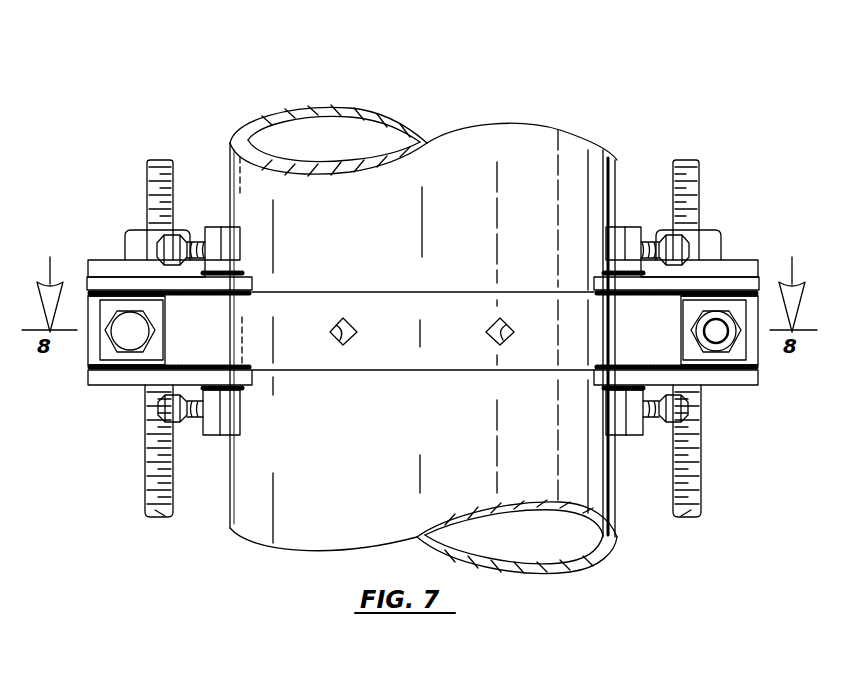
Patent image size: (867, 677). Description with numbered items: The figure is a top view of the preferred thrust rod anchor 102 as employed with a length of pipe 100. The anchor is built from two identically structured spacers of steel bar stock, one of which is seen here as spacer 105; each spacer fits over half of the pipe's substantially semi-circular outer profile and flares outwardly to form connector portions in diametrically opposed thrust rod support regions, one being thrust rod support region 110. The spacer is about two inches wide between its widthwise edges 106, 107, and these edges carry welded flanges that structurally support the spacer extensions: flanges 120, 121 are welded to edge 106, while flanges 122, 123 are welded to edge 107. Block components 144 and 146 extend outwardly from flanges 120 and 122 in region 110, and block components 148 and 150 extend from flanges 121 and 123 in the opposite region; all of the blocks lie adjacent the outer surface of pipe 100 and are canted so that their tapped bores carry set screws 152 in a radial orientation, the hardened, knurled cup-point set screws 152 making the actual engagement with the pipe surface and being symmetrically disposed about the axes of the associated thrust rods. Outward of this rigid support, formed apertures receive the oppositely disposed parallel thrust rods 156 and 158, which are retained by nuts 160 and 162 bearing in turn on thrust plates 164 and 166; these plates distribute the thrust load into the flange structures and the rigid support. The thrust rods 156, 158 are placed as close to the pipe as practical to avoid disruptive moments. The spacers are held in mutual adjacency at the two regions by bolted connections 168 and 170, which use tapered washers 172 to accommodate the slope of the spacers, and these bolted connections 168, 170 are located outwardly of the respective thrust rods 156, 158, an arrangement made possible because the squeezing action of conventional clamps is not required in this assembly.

The pipe segment 100 is at (258, 125).
The thrust rod anchor 102 is at (702, 330).
The spacer 105 is at (515, 353).
The widthwise edge 106 is at (438, 270).
The widthwise edge 107 is at (383, 370).
The thrust rod support region 110 is at (164, 318).
The flange 120 is at (95, 284).
The flange 121 is at (752, 287).
The flange 122 is at (107, 377).
The flange 123 is at (737, 378).
The block component 144 is at (227, 237).
The block component 146 is at (233, 422).
The block component 148 is at (622, 243).
The block component 150 is at (615, 427).
The set screw 152 is at (160, 243).
The thrust rod 156 is at (157, 167).
The thrust rod 158 is at (690, 172).
The nut 160 is at (133, 247).
The nut 162 is at (712, 237).
The thrust plate 164 is at (105, 265).
The thrust plate 166 is at (740, 272).
The bolted connection 168 is at (122, 337).
The bolted connection 170 is at (730, 338).
The tapered washer 172 is at (152, 350).